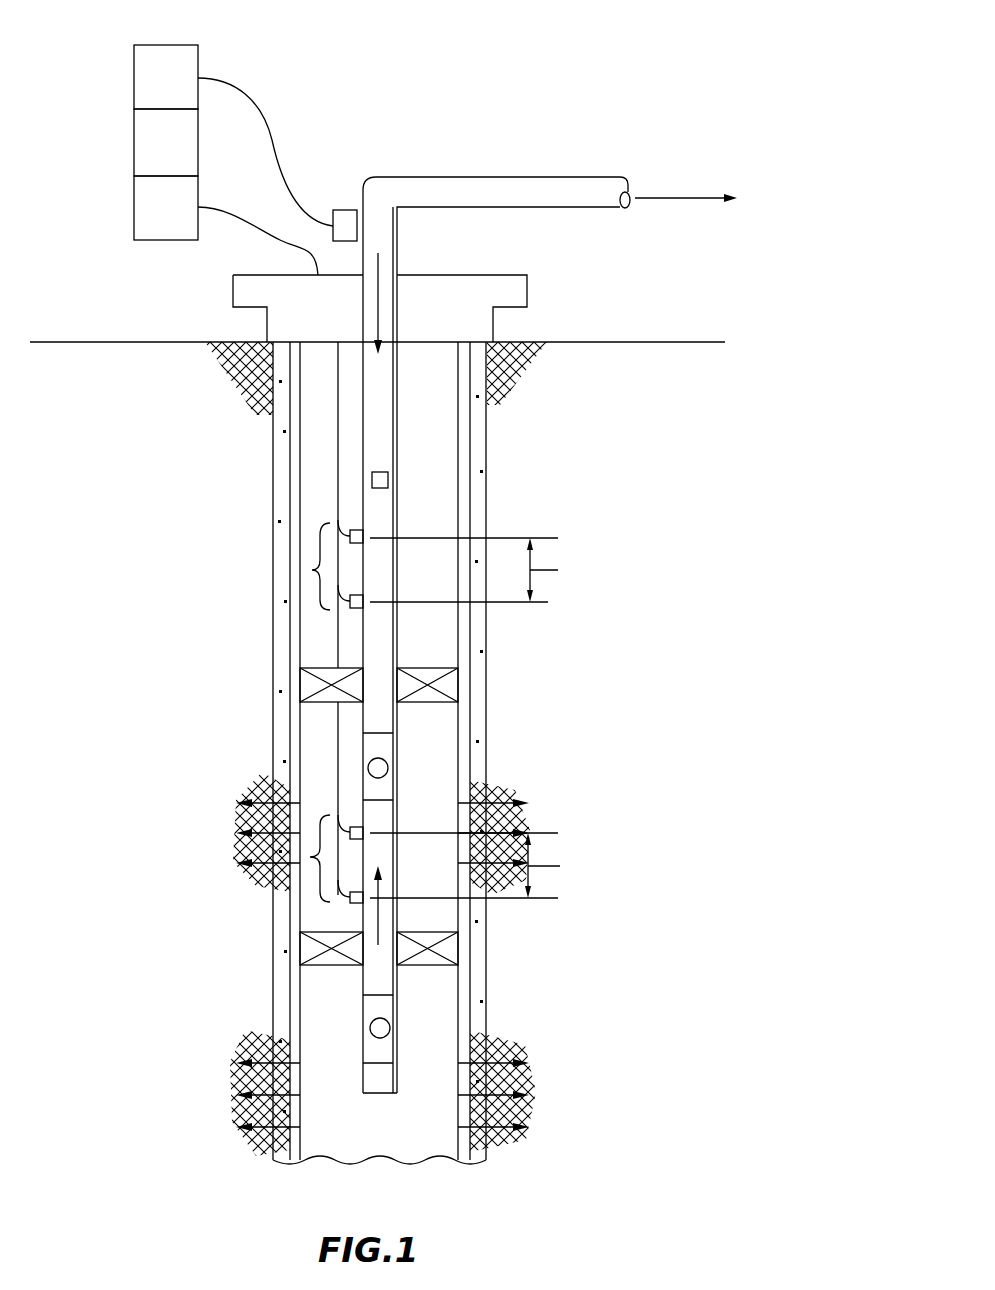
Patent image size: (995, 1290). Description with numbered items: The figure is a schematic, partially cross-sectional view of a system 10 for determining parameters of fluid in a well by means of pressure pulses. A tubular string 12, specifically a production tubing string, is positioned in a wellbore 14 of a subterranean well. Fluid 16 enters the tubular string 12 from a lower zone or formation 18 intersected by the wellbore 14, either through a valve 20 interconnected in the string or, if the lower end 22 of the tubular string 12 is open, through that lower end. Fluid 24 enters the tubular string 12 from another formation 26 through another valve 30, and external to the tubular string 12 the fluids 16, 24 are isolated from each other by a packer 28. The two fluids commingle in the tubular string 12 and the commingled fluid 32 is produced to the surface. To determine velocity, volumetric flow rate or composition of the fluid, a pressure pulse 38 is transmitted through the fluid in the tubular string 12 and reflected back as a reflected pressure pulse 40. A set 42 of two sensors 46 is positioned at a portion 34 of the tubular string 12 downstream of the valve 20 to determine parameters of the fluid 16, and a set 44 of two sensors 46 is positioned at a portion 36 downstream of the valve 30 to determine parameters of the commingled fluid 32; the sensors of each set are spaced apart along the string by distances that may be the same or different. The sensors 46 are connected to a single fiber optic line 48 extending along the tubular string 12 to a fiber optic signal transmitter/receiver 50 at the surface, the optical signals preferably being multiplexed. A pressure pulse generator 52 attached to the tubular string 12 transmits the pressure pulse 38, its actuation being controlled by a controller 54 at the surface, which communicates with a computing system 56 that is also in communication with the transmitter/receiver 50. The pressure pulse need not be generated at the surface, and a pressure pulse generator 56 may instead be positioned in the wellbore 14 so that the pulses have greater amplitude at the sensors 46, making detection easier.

The system 10 is at (702, 86).
The tubular string 12 is at (398, 422).
The wellbore 14 is at (462, 452).
The fluid 16 is at (452, 1083).
The formation 18 is at (532, 1053).
The valve 20 is at (363, 1010).
The lower end 22 is at (375, 1094).
The fluid 24 is at (409, 779).
The formation 26 is at (537, 817).
The packer 28 is at (433, 966).
The valve 30 is at (363, 745).
The commingled fluid 32 is at (696, 197).
The portion of the tubular string 34 is at (398, 880).
The portion of the tubular string 36 is at (398, 587).
The pressure pulse 38 is at (380, 293).
The reflected pressure pulse 40 is at (302, 931).
The sensor set 42 is at (305, 857).
The sensor set 44 is at (312, 570).
The sensor 46 is at (365, 530).
The fiber optic line 48 is at (338, 437).
The fiber optic signal transmitter/receiver 50 is at (181, 222).
The pressure pulse generator 52 is at (347, 208).
The controller 54 is at (181, 90).
The computing system 56 is at (181, 156).